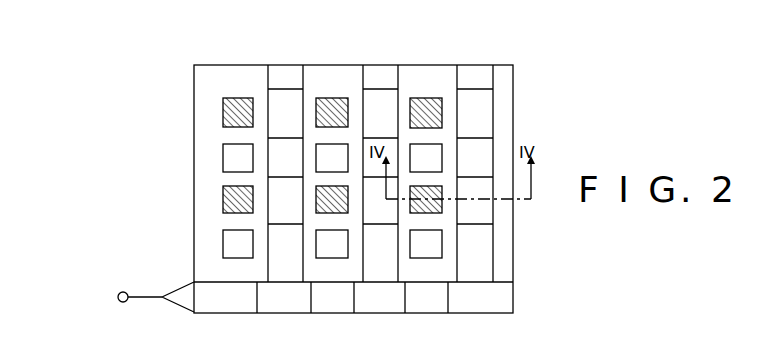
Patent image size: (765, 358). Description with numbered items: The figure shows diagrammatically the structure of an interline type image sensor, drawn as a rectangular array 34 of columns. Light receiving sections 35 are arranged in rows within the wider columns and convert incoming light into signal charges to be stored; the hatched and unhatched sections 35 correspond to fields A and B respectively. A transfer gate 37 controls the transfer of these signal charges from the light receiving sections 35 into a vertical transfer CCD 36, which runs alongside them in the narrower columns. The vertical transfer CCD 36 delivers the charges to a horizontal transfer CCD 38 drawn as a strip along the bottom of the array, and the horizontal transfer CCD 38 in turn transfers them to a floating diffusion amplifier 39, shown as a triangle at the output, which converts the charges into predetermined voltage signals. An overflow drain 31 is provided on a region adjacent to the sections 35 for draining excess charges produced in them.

The overflow drain 31 is at (417, 62).
The photosensor array 34 is at (212, 65).
The light receiving sections 35 is at (220, 107).
The vertical transfer CCD 36 is at (291, 76).
The transfer gate 37 is at (285, 62).
The horizontal transfer CCD 38 is at (422, 303).
The floating diffusion amplifier 39 is at (182, 293).